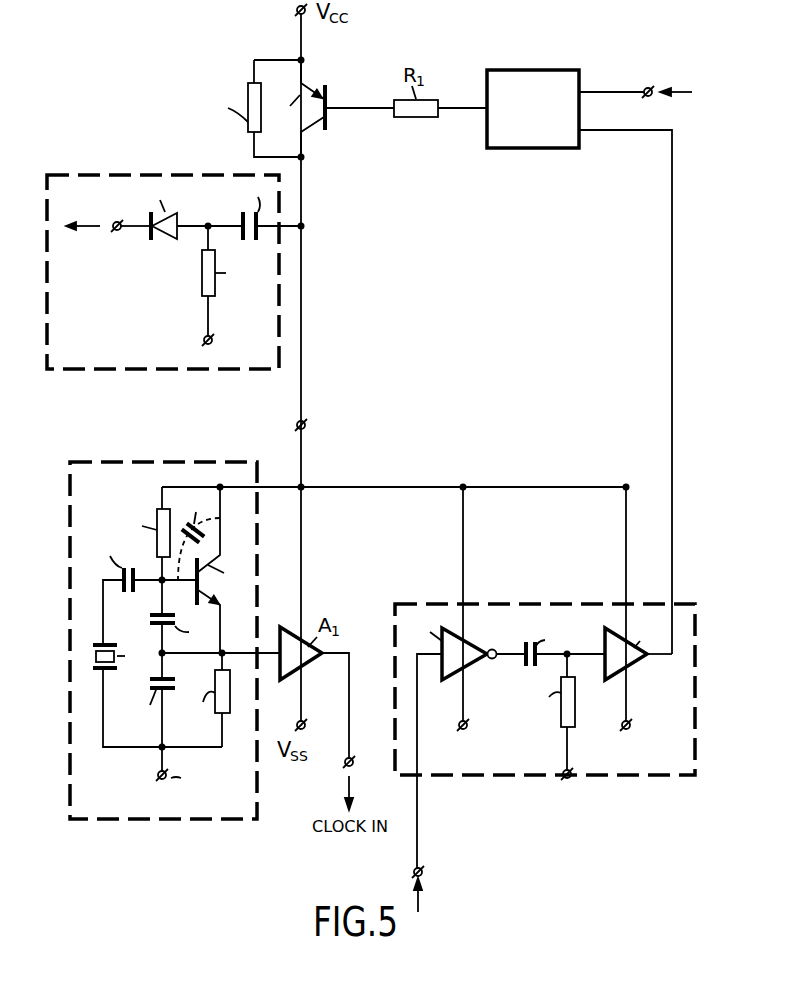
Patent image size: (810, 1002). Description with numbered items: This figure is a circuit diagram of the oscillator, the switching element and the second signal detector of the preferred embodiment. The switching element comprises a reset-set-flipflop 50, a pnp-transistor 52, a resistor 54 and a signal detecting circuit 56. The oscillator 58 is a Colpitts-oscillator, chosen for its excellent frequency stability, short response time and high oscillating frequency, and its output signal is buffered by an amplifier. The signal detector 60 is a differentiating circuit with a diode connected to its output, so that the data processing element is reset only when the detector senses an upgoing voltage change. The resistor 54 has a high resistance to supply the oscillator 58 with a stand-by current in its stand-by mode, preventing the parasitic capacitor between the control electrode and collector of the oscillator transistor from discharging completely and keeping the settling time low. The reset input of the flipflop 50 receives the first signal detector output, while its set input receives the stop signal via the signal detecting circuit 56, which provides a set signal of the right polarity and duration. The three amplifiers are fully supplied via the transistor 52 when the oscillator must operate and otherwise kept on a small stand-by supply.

The reset-set-flipflop 50 is at (547, 150).
The pnp-transistor 52 is at (311, 124).
The resistor 54 is at (248, 88).
The signal detecting circuit 56 is at (660, 778).
The oscillator 58 is at (145, 460).
The signal detector 60 is at (152, 371).